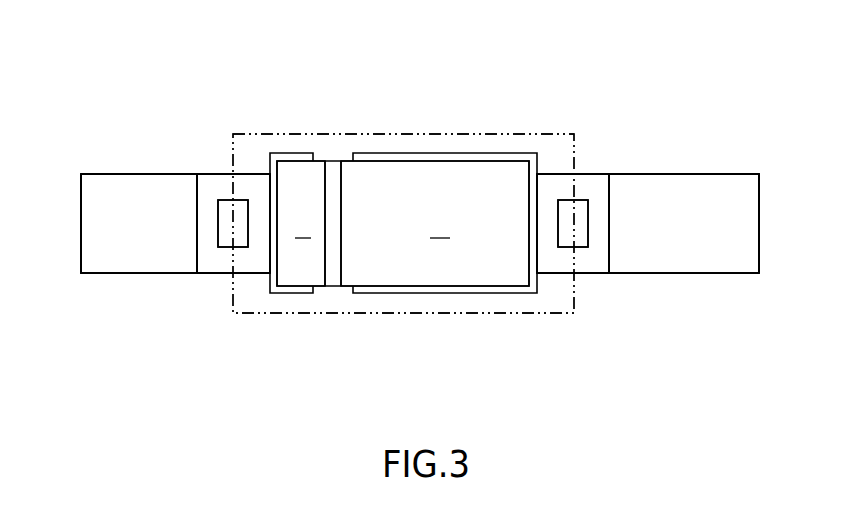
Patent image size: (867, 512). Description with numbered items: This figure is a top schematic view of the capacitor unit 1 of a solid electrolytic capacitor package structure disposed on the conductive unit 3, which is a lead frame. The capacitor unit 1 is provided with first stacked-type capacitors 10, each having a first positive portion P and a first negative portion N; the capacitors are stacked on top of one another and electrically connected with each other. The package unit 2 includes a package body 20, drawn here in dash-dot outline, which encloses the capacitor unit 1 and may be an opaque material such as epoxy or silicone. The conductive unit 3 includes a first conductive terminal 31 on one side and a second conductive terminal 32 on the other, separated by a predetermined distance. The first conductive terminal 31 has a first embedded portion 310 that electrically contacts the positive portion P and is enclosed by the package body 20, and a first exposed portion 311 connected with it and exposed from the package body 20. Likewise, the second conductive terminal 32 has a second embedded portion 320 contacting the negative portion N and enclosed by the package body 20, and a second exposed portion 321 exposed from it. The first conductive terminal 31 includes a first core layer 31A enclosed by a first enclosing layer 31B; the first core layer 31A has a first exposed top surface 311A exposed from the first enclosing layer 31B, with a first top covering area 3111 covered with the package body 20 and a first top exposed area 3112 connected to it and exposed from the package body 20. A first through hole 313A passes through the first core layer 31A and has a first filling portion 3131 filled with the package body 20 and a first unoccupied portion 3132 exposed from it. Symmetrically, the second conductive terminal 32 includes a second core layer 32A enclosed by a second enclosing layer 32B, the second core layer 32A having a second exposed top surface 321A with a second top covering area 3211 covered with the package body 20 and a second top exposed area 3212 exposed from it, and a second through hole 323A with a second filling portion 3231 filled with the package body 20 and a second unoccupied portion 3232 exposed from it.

The capacitor unit 1 is at (330, 85).
The first stacked-type capacitor 10 is at (331, 163).
The package unit 2 is at (475, 48).
The package body 20 is at (451, 132).
The conductive unit 3 is at (148, 93).
The first embedded portion 310 is at (300, 291).
The second embedded portion 320 is at (445, 291).
The first conductive terminal 31 is at (138, 176).
The first exposed portion 311 is at (128, 258).
The first core layer 31A is at (208, 202).
The first enclosing layer 31B is at (112, 235).
The first exposed top surface 311A is at (273, 359).
The first top exposed area 3112 is at (213, 263).
The first top covering area 3111 is at (255, 265).
The first through hole 313A is at (282, 88).
The first unoccupied portion 3132 is at (223, 208).
The first filling portion 3131 is at (242, 208).
The second conductive terminal 32 is at (690, 176).
The second exposed portion 321 is at (702, 252).
The second core layer 32A is at (606, 203).
The second enclosing layer 32B is at (742, 236).
The second exposed top surface 321A is at (643, 359).
The second top covering area 3211 is at (553, 262).
The second top exposed area 3212 is at (595, 262).
The second through hole 323A is at (638, 88).
The second filling portion 3231 is at (566, 208).
The second unoccupied portion 3232 is at (583, 208).